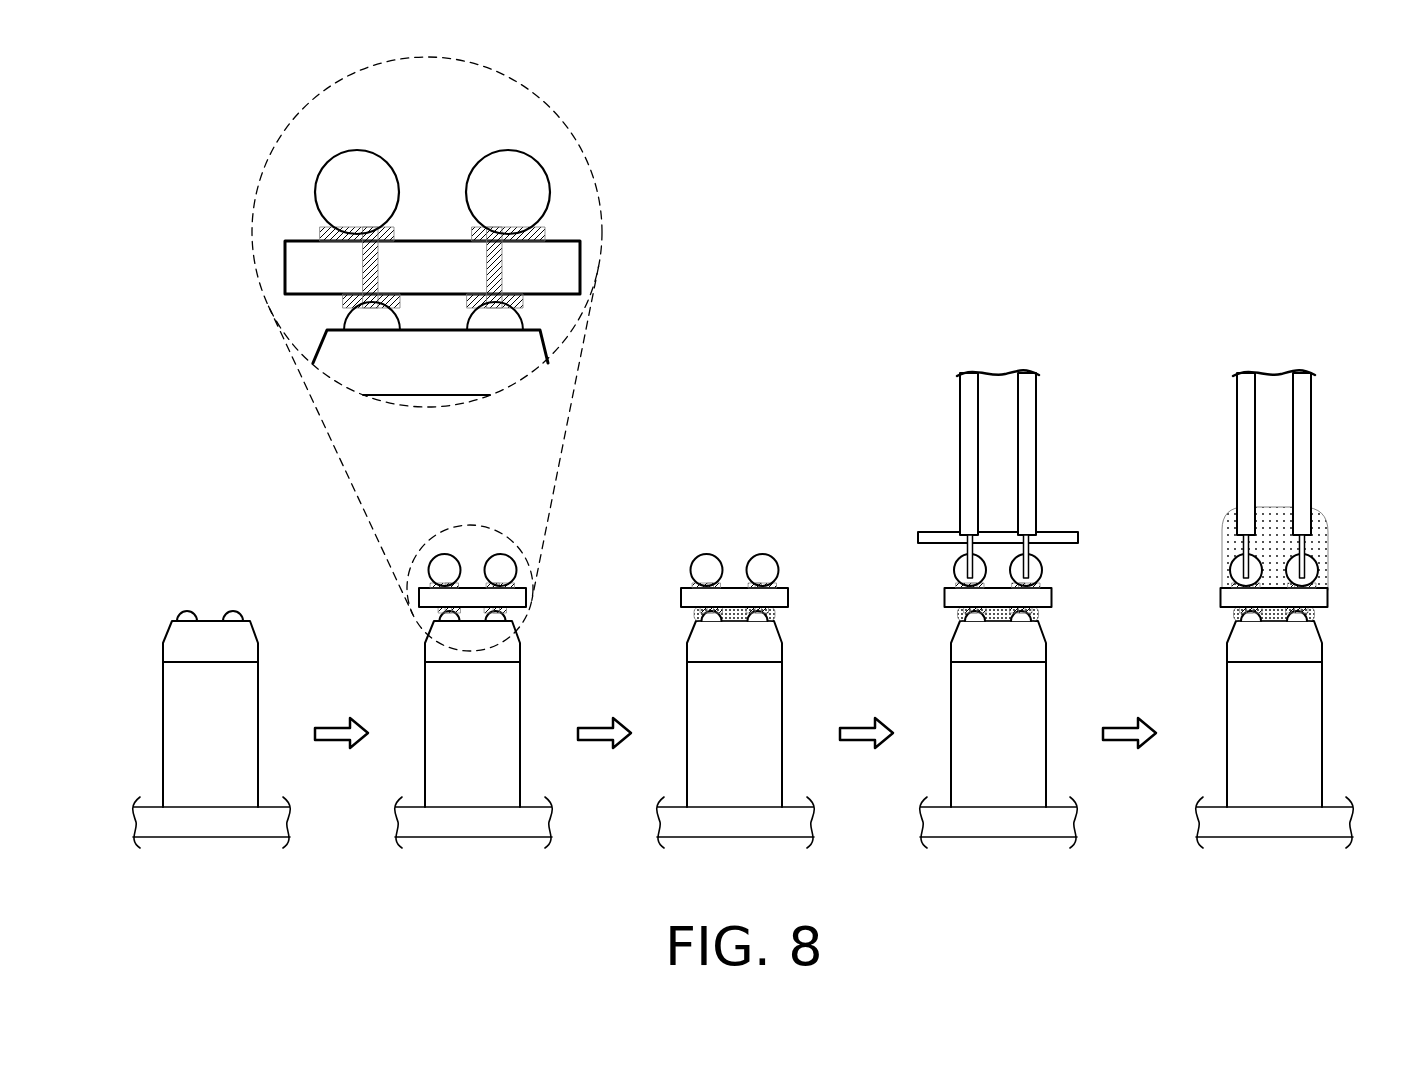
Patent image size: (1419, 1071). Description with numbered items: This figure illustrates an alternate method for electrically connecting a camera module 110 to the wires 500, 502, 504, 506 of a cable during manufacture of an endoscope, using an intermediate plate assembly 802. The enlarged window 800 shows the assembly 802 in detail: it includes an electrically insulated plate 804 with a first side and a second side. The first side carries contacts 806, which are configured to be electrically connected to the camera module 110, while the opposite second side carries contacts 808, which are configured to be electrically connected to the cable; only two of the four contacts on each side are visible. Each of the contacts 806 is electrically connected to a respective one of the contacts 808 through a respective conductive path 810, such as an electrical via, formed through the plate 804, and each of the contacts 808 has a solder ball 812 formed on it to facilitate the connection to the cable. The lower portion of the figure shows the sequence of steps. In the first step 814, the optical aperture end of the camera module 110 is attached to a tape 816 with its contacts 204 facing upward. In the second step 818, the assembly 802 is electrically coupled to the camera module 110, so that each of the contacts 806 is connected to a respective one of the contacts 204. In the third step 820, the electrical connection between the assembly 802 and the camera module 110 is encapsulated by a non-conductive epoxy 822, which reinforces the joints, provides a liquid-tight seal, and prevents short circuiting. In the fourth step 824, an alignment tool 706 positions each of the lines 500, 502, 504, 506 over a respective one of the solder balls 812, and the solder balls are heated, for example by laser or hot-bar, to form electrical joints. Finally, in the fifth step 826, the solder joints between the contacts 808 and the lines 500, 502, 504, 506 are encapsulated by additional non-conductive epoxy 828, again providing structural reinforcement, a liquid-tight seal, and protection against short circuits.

The camera module 110 is at (427, 368).
The contacts 204 is at (247, 614).
The wire 500 is at (1042, 474).
The wire 502 is at (1042, 474).
The wire 504 is at (1042, 474).
The wire 506 is at (936, 454).
The alignment tool 706 is at (926, 537).
The enlarged window 800 is at (332, 82).
The intermediate plate assembly 802 is at (292, 166).
The electrically insulated plate 804 is at (438, 268).
The contacts 806 is at (346, 305).
The contacts 808 is at (322, 232).
The conductive path 810 is at (370, 272).
The solder ball 812 is at (340, 194).
The first step 814 is at (171, 584).
The tape 816 is at (226, 817).
The second step 818 is at (365, 621).
The third step 820 is at (630, 615).
The non-conductive epoxy 822 is at (773, 613).
The fourth step 824 is at (964, 553).
The fifth step 826 is at (1185, 615).
The additional non-conductive epoxy 828 is at (1318, 523).